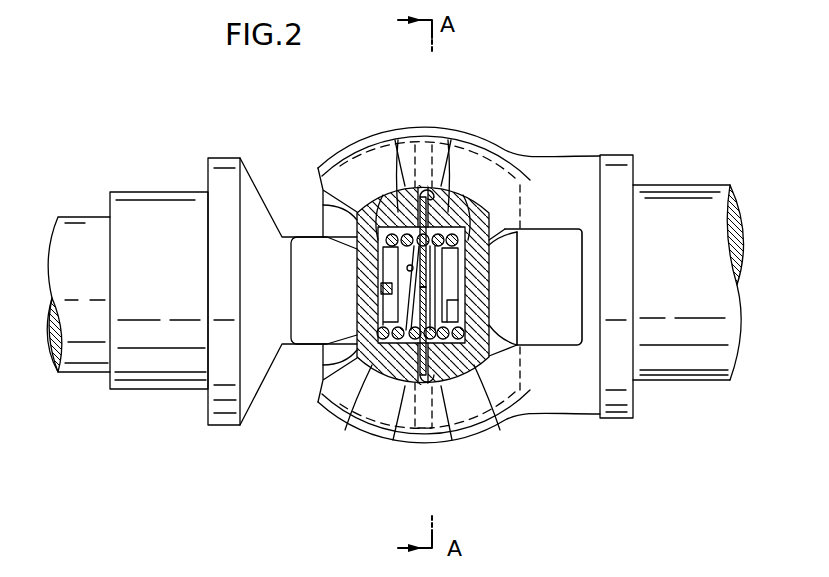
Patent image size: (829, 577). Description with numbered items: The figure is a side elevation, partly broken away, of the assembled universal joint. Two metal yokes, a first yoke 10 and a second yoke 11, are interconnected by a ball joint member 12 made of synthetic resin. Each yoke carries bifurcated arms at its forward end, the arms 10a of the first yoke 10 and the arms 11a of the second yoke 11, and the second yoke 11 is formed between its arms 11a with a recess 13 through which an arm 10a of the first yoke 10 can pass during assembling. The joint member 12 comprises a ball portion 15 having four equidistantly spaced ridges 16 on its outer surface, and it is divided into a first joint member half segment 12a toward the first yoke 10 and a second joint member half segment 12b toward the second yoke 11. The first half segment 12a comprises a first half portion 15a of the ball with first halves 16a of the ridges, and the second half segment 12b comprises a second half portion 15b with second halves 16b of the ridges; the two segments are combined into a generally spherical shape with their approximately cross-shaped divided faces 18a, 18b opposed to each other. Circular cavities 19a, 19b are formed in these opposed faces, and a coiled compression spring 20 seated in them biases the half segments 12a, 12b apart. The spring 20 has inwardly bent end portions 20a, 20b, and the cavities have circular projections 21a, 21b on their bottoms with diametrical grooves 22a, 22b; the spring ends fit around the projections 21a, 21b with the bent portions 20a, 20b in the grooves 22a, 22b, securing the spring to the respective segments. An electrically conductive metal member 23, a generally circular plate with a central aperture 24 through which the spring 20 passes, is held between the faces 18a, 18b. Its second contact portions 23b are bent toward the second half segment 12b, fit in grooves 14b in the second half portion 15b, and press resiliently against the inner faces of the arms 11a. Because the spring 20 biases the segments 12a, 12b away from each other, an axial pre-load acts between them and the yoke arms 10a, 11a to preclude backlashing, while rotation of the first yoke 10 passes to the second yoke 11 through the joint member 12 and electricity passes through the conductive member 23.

The first yoke 10 is at (80, 375).
The arms of first yoke 10a is at (297, 236).
The second yoke 11 is at (690, 383).
The arms of second yoke 11a is at (440, 128).
The ball joint member 12 is at (382, 188).
The first joint member half segment 12a is at (366, 384).
The second joint member half segment 12b is at (490, 378).
The recess 13 is at (583, 238).
The grooves for second contact portions 14b is at (462, 178).
The ball portion 15 is at (405, 195).
The first half portion 15a is at (378, 392).
The second half portion 15b is at (460, 385).
The ridges 16 is at (320, 198).
The first halves of ridges 16a is at (322, 200).
The second halves of ridges 16b is at (495, 242).
The divided face of first half segment 18a is at (418, 396).
The divided face of second half segment 18b is at (424, 200).
The circular cavity in first half segment 19a is at (373, 205).
The circular cavity in second half segment 19b is at (495, 235).
The coiled compression spring 20 is at (357, 249).
The first bent portion of spring 20a is at (383, 282).
The second bent portion of spring 20b is at (460, 308).
The circular projection in first cavity 21a is at (407, 268).
The circular projection in second cavity 21b is at (447, 287).
The diametrical groove in first projection 22a is at (382, 302).
The diametrical groove in second projection 22b is at (458, 258).
The electrically conductive metal member 23 is at (403, 385).
The second contact portions 23b is at (436, 192).
The aperture 24 is at (450, 208).